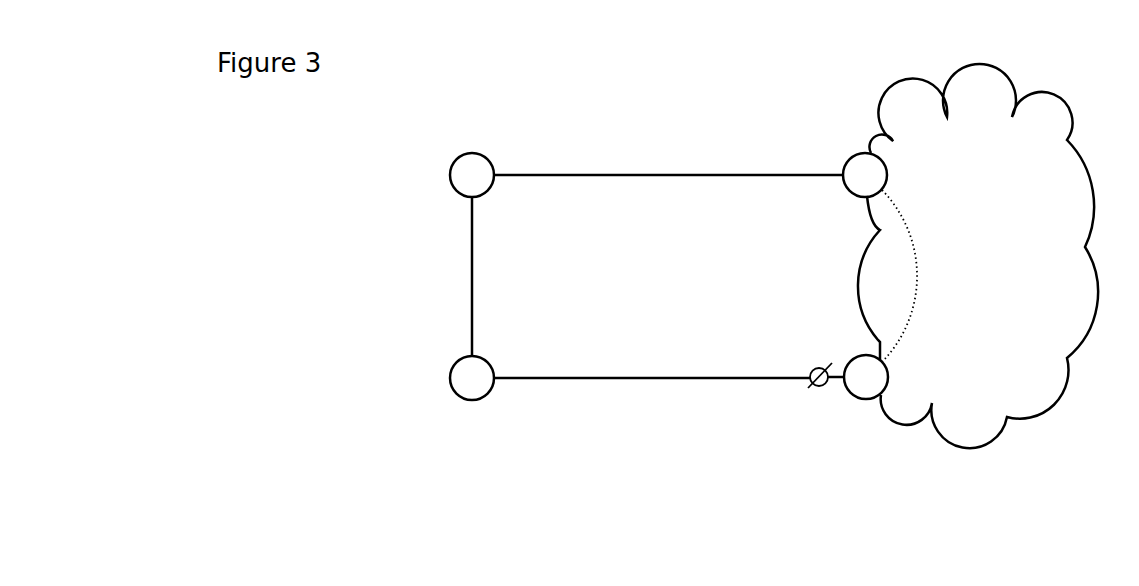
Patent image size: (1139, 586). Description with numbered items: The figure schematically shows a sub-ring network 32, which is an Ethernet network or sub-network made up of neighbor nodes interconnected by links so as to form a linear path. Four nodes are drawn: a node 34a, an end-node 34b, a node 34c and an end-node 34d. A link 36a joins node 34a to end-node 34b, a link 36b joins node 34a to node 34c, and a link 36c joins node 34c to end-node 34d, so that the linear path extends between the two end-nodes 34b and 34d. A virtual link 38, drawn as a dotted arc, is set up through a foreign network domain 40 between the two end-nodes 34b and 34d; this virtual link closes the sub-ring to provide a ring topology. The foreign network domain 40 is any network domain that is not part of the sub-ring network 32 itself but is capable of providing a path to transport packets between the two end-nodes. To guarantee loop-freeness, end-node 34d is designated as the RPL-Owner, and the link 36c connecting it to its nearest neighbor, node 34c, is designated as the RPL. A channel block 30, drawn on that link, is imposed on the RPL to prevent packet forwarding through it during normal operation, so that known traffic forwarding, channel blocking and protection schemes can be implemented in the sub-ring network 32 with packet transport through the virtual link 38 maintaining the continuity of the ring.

The channel block 30 is at (812, 368).
The sub-ring network 32 is at (438, 110).
The node 34a is at (479, 153).
The end-node 34b is at (858, 155).
The node 34c is at (460, 398).
The end-node 34d is at (862, 398).
The link 36a is at (627, 175).
The link 36b is at (472, 280).
The link 36c is at (612, 378).
The virtual link 38 is at (918, 228).
The foreign network domain 40 is at (1028, 311).